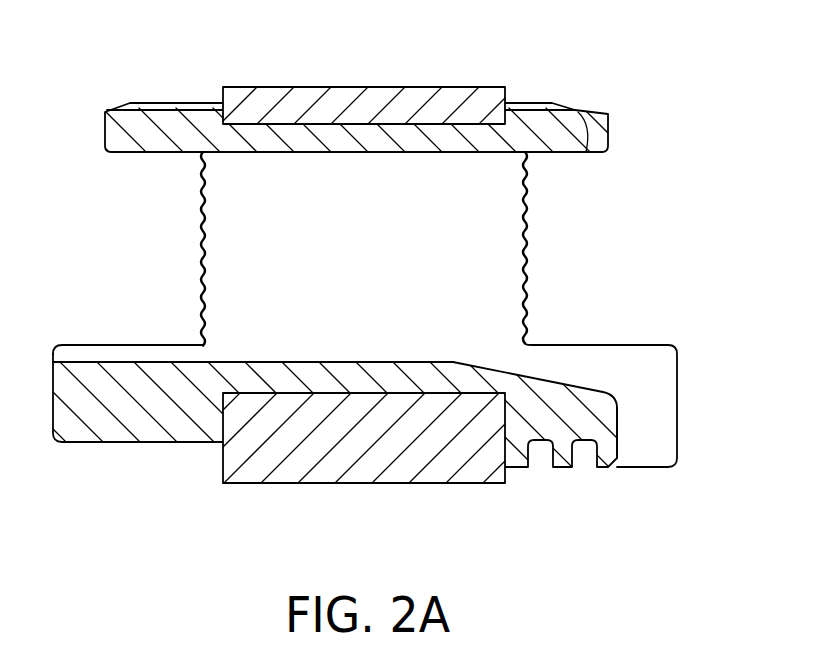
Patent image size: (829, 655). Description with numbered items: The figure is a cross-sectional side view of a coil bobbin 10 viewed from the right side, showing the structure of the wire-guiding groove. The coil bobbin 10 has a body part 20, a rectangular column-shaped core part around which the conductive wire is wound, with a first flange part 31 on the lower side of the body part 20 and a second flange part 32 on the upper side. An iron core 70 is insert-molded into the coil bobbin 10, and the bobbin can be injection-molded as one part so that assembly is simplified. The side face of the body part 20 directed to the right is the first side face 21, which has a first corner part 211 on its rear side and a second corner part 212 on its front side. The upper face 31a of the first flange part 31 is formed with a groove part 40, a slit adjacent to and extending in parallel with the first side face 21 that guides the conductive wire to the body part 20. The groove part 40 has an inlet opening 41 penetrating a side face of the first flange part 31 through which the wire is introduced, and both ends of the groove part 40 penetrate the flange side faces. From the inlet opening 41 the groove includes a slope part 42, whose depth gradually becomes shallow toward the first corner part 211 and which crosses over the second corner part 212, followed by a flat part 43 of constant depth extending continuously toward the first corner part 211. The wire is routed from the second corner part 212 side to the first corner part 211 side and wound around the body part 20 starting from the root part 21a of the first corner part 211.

The coil bobbin 10 is at (84, 52).
The body part 20 is at (334, 253).
The first side face 21 is at (350, 253).
The first corner part 211 is at (203, 232).
The second corner part 212 is at (527, 238).
The root part 21a is at (200, 334).
The first flange part 31 is at (145, 456).
The upper face 31a is at (600, 344).
The second flange part 32 is at (612, 118).
The groove part 40 is at (405, 349).
The inlet opening 41 is at (640, 378).
The slope part 42 is at (536, 378).
The flat part 43 is at (243, 362).
The iron core 70 is at (430, 87).